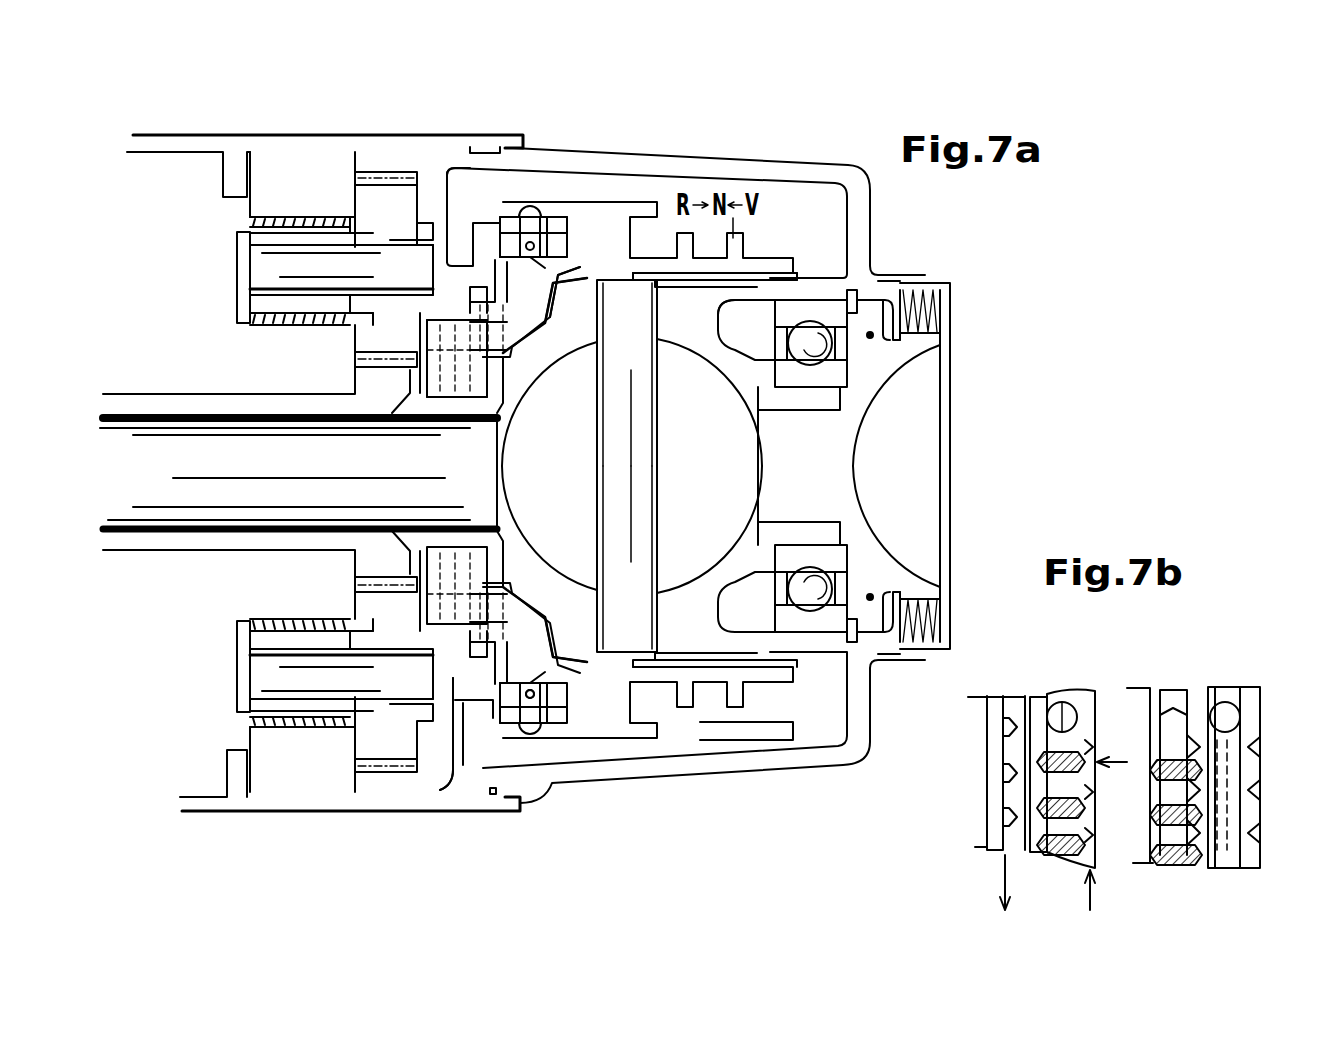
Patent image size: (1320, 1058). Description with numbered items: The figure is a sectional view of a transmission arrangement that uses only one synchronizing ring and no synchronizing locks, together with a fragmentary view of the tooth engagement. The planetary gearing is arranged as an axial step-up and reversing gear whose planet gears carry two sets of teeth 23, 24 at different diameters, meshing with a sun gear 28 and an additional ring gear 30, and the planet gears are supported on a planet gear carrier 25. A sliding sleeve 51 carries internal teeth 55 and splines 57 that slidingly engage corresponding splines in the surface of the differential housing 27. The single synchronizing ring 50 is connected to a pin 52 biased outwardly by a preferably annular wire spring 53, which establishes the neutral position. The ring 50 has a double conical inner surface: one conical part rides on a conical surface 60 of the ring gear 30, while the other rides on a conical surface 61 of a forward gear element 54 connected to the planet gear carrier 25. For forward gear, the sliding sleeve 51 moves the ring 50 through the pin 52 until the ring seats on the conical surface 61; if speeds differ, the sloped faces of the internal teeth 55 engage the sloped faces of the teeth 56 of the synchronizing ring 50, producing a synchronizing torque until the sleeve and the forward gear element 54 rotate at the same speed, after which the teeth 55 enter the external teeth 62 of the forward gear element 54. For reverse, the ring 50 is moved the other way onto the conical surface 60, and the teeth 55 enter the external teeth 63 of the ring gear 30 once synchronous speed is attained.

In FIG. 7A, the set of teeth 23 is at (272, 236).
In FIG. 7A, the set of teeth 24 is at (375, 202).
In FIG. 7A, the planet gear carrier 25 is at (250, 268).
In FIG. 7A, the differential housing 27 is at (797, 275).
In FIG. 7A, the sun gear 28 is at (187, 405).
In FIG. 7A, the ring gear 30 is at (447, 168).
In FIG. 7A, the synchronizing ring 50 is at (550, 697).
In FIG. 7B, the synchronizing ring 50 is at (1250, 703).
In FIG. 7A, the sliding sleeve 51 is at (643, 723).
In FIG. 7A, the pin 52 is at (530, 720).
In FIG. 7B, the pin 52 is at (1047, 702).
In FIG. 7A, the annular wire spring 53 is at (537, 717).
In FIG. 7B, the annular wire spring 53 is at (1223, 757).
In FIG. 7A, the forward gear element 54 is at (577, 257).
In FIG. 7A, the internal teeth 55 is at (507, 227).
In FIG. 7B, the internal teeth 55 is at (1170, 865).
In FIG. 7A, the teeth 56 is at (507, 737).
In FIG. 7B, the teeth 56 is at (1250, 752).
In FIG. 7A, the splines 57 is at (757, 290).
In FIG. 7A, the conical surface 60 is at (498, 260).
In FIG. 7A, the conical surface 61 is at (540, 263).
In FIG. 7A, the external teeth 62 is at (578, 713).
In FIG. 7B, the external teeth 62 is at (1166, 700).
In FIG. 7A, the external teeth 63 is at (478, 717).